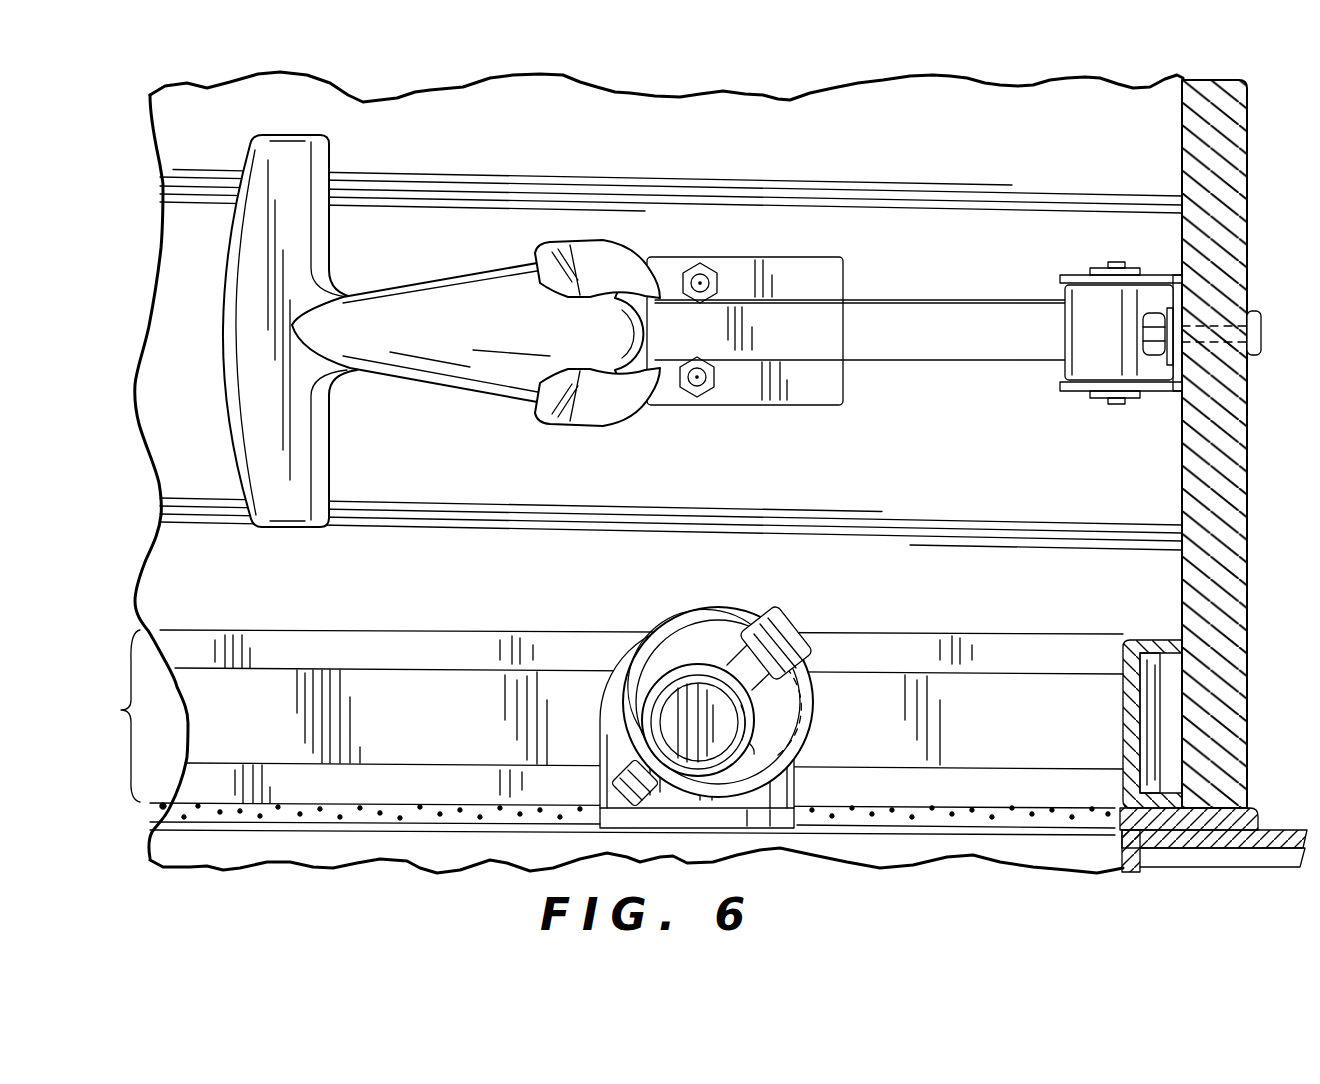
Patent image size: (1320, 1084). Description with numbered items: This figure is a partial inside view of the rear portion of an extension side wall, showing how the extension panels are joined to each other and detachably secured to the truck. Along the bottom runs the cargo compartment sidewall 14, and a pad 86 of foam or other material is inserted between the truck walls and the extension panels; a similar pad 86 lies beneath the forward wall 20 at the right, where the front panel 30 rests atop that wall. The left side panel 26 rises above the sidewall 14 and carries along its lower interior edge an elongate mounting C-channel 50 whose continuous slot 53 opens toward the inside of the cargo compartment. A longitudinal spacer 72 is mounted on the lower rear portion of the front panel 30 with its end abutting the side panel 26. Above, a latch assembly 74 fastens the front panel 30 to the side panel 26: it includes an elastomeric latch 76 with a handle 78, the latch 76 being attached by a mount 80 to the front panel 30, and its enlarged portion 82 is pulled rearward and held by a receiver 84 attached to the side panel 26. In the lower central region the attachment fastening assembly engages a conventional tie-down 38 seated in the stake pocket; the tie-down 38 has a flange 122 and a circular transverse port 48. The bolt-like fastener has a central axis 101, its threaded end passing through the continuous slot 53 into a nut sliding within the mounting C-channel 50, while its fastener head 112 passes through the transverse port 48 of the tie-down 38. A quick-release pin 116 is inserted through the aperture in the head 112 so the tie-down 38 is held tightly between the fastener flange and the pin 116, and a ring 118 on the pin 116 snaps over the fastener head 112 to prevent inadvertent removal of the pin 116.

The sidewall 14 is at (332, 861).
The forward wall 20 is at (1200, 838).
The left side panel 26 is at (932, 147).
The front panel 30 is at (1228, 250).
The tie-down 38 is at (612, 755).
The transverse port 48 is at (752, 750).
The mounting C-channel 50 is at (596, 701).
The continuous slot 53 is at (198, 667).
The longitudinal spacer 72 is at (1142, 641).
The latch assembly 74 is at (224, 165).
The elastomeric latch 76 is at (812, 349).
The handle 78 is at (265, 235).
The mount 80 is at (1082, 390).
The enlarged portion 82 is at (540, 349).
The receiver 84 is at (582, 245).
The pad 86 is at (180, 824).
The central axis 101 is at (697, 722).
The fastener head 112 is at (673, 698).
The pin 116 is at (778, 628).
The ring 118 is at (800, 696).
The flange 122 is at (767, 828).